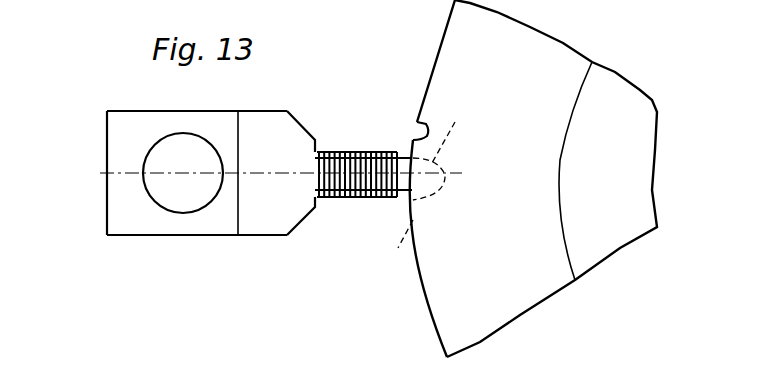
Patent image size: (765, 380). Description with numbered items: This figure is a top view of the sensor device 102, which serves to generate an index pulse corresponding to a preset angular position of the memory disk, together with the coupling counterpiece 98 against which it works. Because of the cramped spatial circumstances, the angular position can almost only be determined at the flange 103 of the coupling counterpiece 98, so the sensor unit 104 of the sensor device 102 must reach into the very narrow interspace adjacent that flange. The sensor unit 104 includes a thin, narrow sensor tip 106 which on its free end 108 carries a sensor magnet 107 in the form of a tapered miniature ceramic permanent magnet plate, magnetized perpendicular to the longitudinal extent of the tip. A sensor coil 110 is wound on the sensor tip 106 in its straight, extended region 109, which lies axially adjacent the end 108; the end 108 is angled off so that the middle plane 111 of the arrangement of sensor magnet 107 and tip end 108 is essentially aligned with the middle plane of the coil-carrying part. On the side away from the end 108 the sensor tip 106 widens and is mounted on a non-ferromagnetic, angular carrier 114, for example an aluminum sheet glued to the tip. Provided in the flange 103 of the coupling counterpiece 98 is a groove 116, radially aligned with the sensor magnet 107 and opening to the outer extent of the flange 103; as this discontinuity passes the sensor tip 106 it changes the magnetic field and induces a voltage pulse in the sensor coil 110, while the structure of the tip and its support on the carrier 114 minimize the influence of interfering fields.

The coupling counterpiece 98 is at (618, 85).
The sensor device 102 is at (362, 88).
The flange 103 is at (440, 303).
The sensor unit 104 is at (217, 248).
The sensor tip 106 is at (289, 140).
The sensor magnet 107 is at (390, 246).
The free end 108 is at (460, 131).
The extended region 109 is at (397, 202).
The sensor coil 110 is at (364, 133).
The middle plane 111 is at (445, 190).
The carrier 114 is at (120, 203).
The groove 116 is at (415, 126).